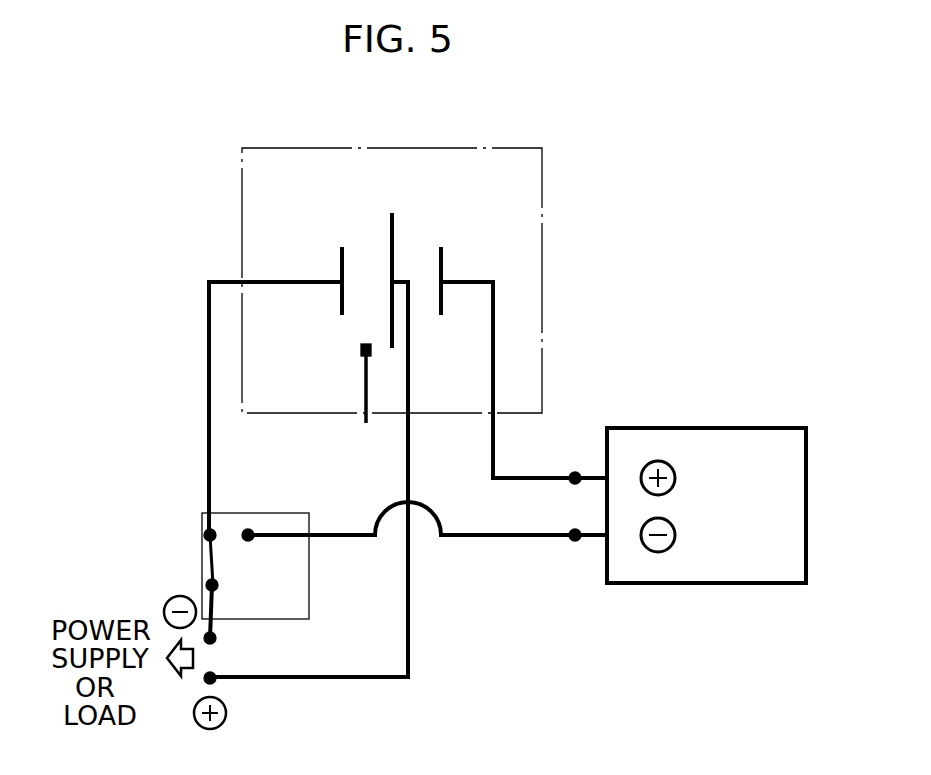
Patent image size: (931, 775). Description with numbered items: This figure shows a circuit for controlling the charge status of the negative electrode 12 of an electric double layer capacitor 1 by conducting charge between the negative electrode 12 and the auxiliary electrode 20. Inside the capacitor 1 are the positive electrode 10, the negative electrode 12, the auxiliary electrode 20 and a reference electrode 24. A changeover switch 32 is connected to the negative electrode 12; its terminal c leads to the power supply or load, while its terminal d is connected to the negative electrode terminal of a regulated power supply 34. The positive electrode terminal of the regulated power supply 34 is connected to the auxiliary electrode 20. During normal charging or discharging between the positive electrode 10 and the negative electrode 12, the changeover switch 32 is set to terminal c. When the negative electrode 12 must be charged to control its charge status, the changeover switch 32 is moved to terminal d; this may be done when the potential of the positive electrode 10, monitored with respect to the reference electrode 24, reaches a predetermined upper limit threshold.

The electric double layer capacitor 1 is at (542, 377).
The positive electrode 10 is at (393, 230).
The negative electrode 12 is at (340, 262).
The auxiliary electrode 20 is at (443, 262).
The reference electrode 24 is at (361, 351).
The changeover switch 32 is at (202, 547).
The regulated power supply 34 is at (773, 428).